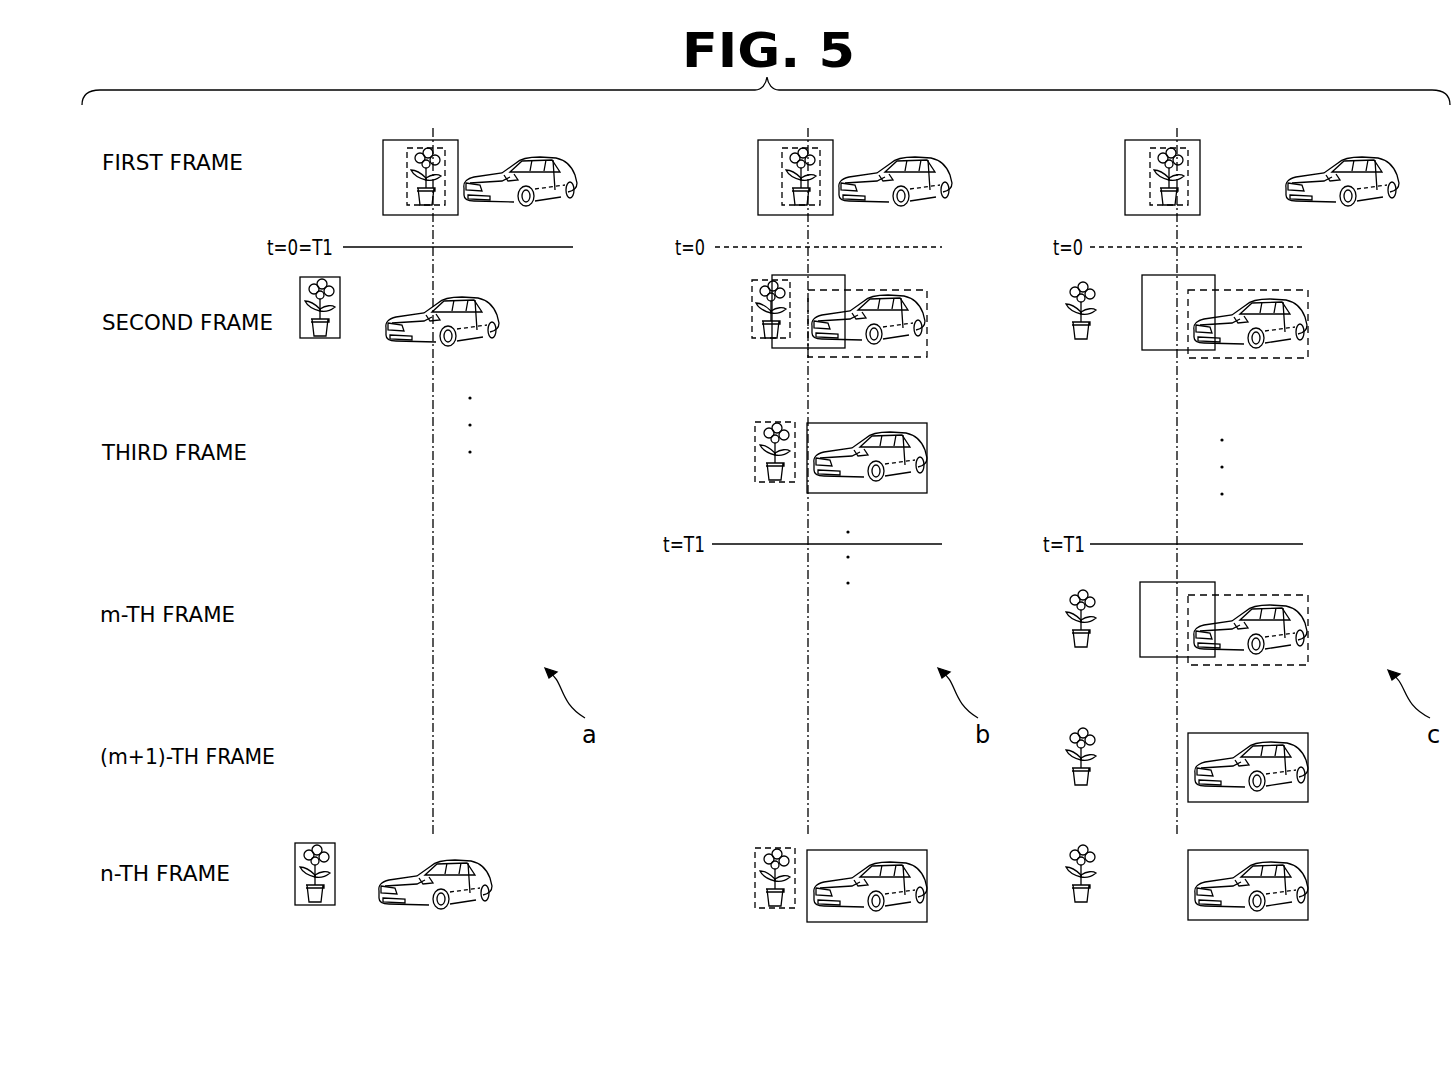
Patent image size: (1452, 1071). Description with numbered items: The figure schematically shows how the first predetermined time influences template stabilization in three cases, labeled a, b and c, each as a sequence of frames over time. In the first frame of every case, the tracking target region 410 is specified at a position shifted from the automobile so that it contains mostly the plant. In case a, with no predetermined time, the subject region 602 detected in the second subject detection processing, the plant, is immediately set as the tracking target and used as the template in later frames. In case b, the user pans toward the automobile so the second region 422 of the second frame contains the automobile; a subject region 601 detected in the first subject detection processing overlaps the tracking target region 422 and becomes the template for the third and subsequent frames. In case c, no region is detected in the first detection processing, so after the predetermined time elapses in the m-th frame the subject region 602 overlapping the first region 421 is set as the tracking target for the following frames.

The tracking target region 410 is at (383, 150).
The subject region detected in the second subject detection processing 602 is at (407, 196).
The subject region detected in the first subject detection processing 601 is at (927, 302).
The second region 422 is at (780, 348).
The first region 421 is at (1148, 657).